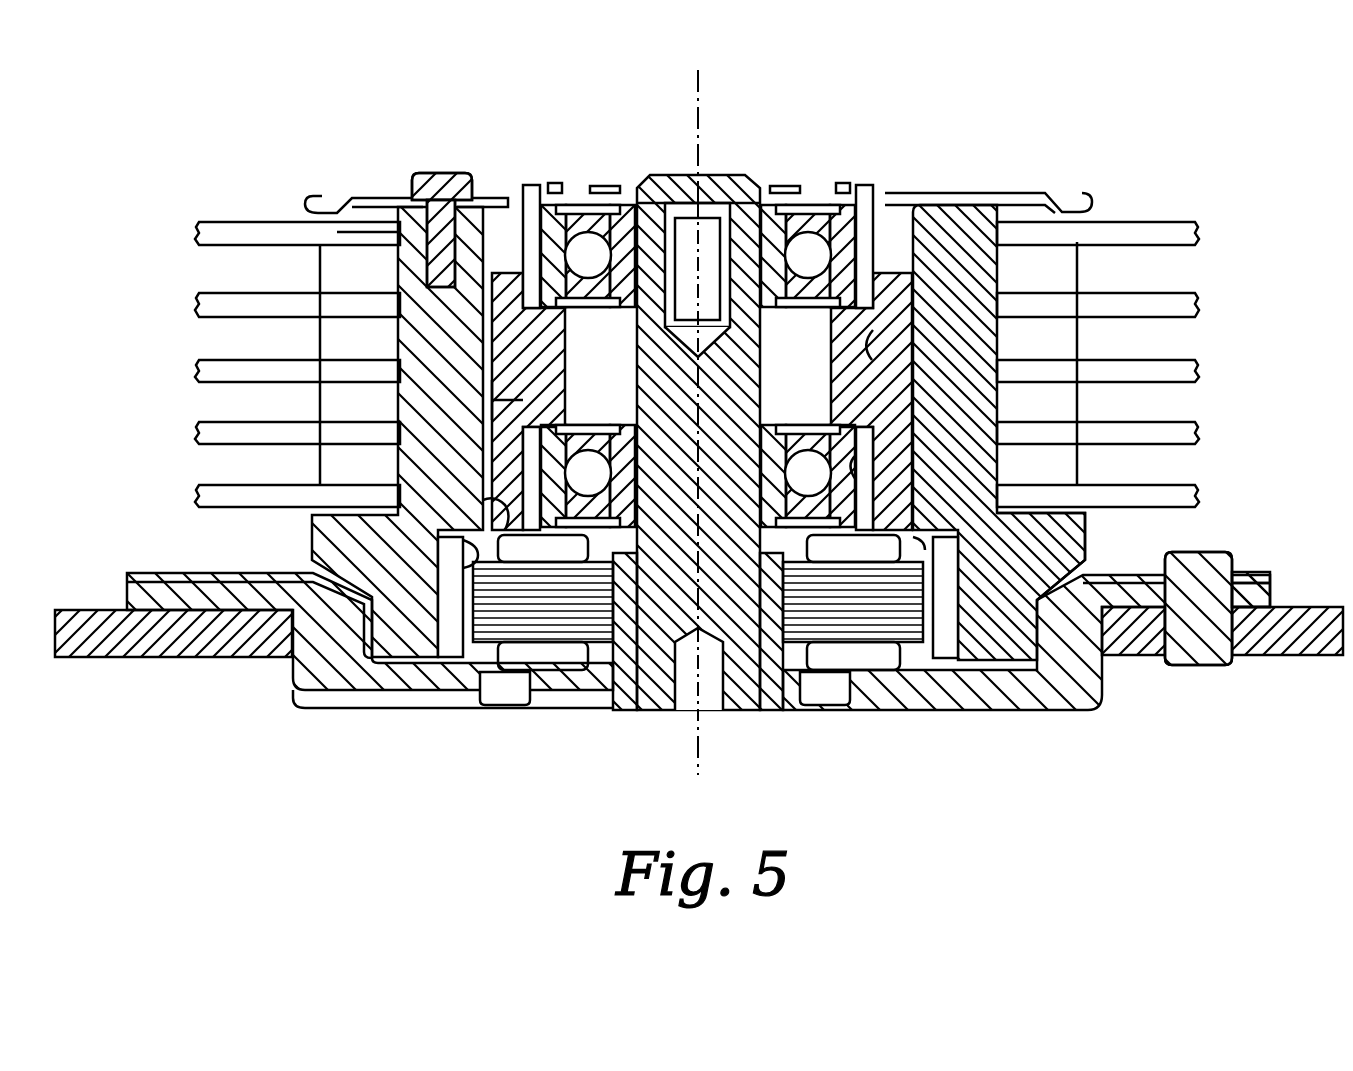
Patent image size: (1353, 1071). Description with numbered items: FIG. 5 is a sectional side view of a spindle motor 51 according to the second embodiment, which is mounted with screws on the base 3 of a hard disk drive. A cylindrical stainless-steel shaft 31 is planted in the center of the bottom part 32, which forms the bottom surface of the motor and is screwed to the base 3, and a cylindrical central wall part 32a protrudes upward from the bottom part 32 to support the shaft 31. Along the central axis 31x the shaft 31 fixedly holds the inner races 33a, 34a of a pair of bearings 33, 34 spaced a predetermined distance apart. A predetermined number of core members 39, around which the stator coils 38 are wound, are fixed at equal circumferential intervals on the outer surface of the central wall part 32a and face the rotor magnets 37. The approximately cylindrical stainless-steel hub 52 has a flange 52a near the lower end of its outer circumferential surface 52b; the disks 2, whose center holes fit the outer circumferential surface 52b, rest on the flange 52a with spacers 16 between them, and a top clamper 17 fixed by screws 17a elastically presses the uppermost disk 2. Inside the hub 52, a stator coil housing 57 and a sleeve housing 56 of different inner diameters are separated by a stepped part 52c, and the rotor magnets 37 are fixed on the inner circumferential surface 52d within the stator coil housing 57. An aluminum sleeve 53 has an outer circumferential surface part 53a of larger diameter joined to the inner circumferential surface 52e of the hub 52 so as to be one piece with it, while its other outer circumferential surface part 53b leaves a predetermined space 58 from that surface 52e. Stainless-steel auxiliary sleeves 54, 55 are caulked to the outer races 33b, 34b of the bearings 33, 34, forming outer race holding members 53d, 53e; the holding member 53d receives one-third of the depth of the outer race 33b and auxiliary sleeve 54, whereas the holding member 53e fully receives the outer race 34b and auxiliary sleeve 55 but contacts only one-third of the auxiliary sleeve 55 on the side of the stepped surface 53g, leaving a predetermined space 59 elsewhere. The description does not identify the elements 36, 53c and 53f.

The disk 2 is at (1168, 196).
The base 3 is at (1278, 645).
The spacer 16 is at (1048, 265).
The top clamper 17 is at (348, 210).
The screw 17a is at (392, 208).
The shaft 31 is at (662, 690).
The central axis 31x is at (708, 118).
The bottom part 32 is at (1100, 685).
The central wall part 32a is at (792, 660).
The bearing 33 is at (798, 178).
The inner race 33a is at (608, 200).
The outer race 33b is at (548, 183).
The bearing 34 is at (612, 420).
The inner race 34a is at (790, 448).
The outer race 34b is at (905, 500).
The coil 36 is at (922, 658).
The rotor magnet 37 is at (455, 615).
The stator coil 38 is at (835, 655).
The core member 39 is at (880, 652).
The spindle motor 51 is at (897, 100).
The hub 52 is at (345, 200).
The flange 52a is at (1078, 548).
The outer circumferential surface 52b is at (400, 322).
The stepped part 52c is at (500, 497).
The inner circumferential surface 52d is at (450, 545).
The inner circumferential surface 52e is at (495, 190).
The sleeve 53 is at (447, 402).
The outer circumferential surface part 53a is at (900, 430).
The outer circumferential surface part 53b is at (935, 312).
The housing groove 53c is at (820, 345).
The outer race holding member 53d is at (930, 210).
The outer race holding member 53e is at (935, 390).
The housing portion 53f is at (495, 328).
The stepped surface 53g is at (512, 402).
The auxiliary sleeve 54 is at (856, 232).
The auxiliary sleeve 55 is at (850, 462).
The sleeve housing 56 is at (896, 222).
The stator coil housing 57 is at (925, 548).
The space 58 is at (455, 345).
The space 59 is at (520, 472).